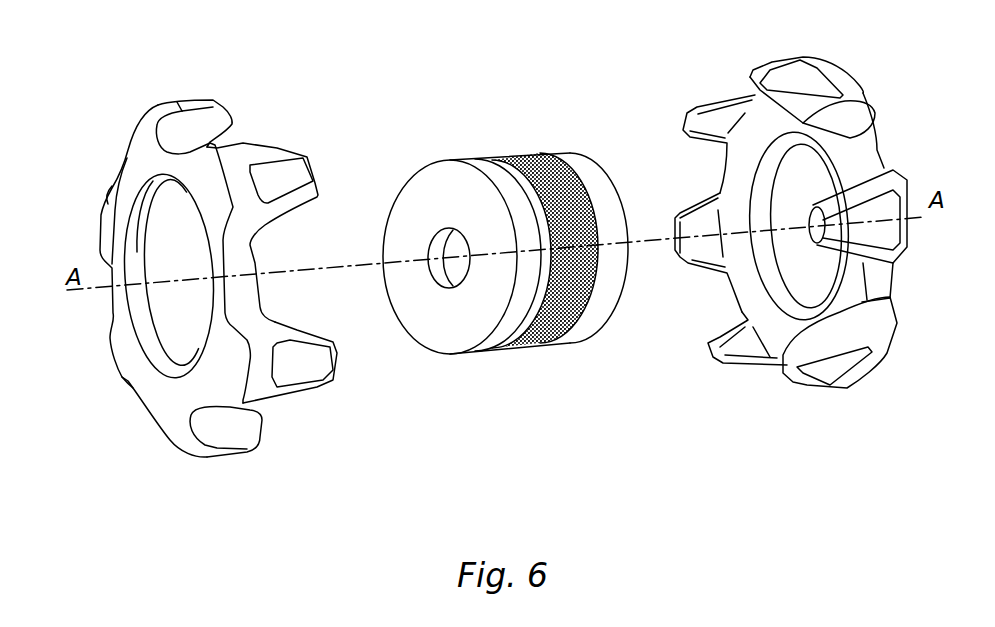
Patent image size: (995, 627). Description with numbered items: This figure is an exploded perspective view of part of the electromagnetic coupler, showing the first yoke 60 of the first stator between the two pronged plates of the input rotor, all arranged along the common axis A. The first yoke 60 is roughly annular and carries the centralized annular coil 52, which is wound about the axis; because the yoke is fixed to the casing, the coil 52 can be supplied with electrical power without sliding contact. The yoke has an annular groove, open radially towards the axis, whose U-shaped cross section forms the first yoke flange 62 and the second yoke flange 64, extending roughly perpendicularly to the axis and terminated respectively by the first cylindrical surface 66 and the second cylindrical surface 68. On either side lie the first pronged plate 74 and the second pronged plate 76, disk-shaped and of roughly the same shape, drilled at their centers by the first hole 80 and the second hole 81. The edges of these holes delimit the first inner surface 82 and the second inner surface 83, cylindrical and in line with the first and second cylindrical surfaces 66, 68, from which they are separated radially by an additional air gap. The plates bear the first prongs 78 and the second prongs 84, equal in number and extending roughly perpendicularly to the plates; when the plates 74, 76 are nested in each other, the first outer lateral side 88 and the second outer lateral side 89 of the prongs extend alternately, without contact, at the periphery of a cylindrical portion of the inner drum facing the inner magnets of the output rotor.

The centralized annular coil 52 is at (503, 160).
The first yoke 60 is at (454, 333).
The first yoke flange 62 is at (591, 329).
The second yoke flange 64 is at (502, 338).
The first cylindrical surface 66 is at (577, 172).
The second cylindrical surface 68 is at (477, 170).
The first pronged plate 74 is at (903, 288).
The second pronged plate 76 is at (172, 406).
The first prongs 78 is at (799, 84).
The first hole 80 is at (816, 183).
The second hole 81 is at (167, 213).
The first inner surface 82 is at (788, 302).
The second inner surface 83 is at (147, 331).
The second prongs 84 is at (185, 91).
The first outer lateral side 88 is at (820, 380).
The second outer lateral side 89 is at (306, 377).